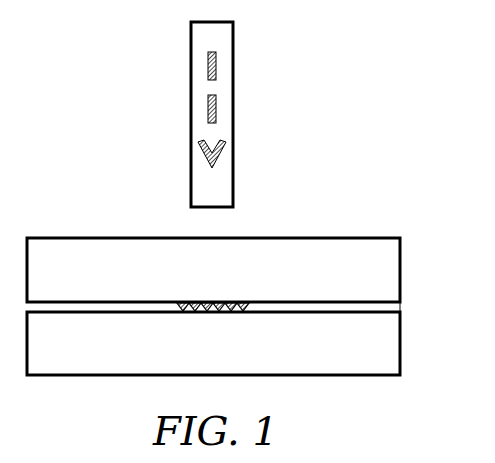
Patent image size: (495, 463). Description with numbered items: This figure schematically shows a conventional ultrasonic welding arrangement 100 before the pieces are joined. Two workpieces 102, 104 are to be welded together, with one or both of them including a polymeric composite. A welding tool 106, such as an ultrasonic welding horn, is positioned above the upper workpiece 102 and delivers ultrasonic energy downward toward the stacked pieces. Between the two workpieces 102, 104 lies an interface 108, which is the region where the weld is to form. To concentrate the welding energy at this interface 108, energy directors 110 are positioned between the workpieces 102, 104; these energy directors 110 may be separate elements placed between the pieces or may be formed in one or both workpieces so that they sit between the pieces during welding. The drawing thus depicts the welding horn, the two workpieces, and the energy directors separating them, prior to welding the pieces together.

The system 100 is at (287, 58).
The workpiece 102 is at (382, 290).
The workpiece 104 is at (382, 358).
The welding tool 106 is at (190, 108).
The interface 108 is at (412, 326).
The energy directors 110 is at (178, 330).